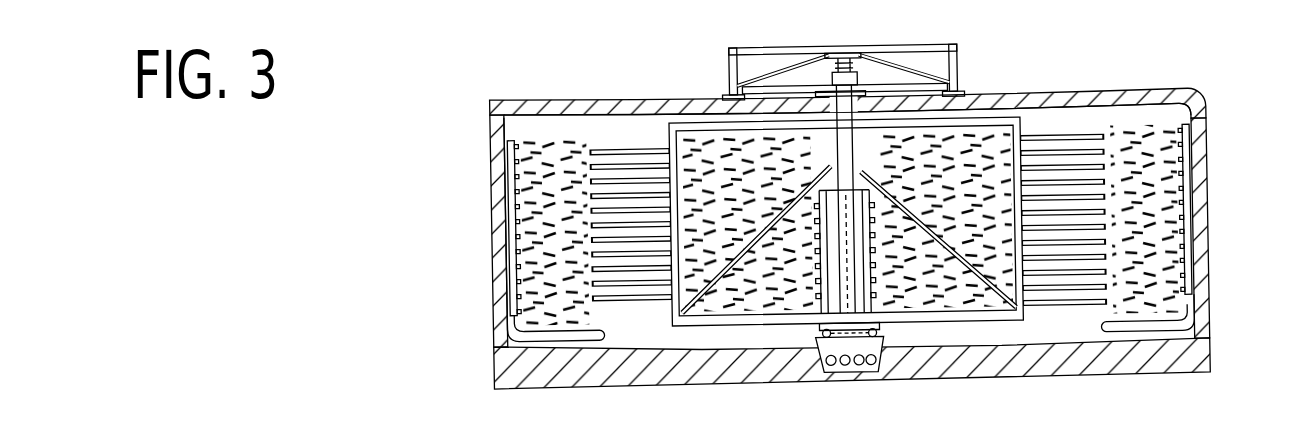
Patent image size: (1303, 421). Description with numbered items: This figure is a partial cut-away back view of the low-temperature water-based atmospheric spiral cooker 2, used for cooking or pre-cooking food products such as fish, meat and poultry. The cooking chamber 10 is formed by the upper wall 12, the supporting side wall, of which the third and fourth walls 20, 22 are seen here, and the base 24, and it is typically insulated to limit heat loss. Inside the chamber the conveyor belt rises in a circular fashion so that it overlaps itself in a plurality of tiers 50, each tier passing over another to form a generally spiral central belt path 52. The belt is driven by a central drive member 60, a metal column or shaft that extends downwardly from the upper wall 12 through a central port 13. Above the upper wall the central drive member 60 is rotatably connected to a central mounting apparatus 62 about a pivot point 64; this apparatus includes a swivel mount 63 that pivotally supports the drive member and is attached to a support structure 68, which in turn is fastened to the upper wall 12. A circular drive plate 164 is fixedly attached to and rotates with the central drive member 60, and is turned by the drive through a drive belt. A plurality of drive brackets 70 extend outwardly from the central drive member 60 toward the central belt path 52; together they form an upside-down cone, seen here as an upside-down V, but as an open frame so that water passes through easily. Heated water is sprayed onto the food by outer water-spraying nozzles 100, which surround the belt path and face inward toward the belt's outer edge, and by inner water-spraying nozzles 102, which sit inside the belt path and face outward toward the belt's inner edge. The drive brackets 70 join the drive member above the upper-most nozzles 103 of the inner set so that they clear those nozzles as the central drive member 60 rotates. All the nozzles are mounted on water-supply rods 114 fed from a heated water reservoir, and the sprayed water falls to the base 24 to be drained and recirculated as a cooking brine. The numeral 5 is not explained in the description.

The atmospheric cooker 2 is at (1099, 46).
The heat exchange tubes 5 is at (658, 182).
The cooking chamber 10 is at (1161, 80).
The upper wall 12 is at (1112, 89).
The central port 13 is at (889, 84).
The third wall 20 is at (492, 208).
The fourth wall 22 is at (1210, 180).
The base 24 is at (1157, 370).
The tiers 50 is at (602, 167).
The spiral central belt path 52 is at (826, 224).
The central drive member 60 is at (849, 150).
The central mounting apparatus 62 is at (860, 51).
The swivel mount 63 is at (833, 52).
The pivot point 64 is at (870, 60).
The support structure 68 is at (732, 52).
The drive brackets 70 is at (827, 173).
The outer water-spraying nozzles 100 is at (517, 137).
The inner water-spraying nozzles 102 is at (835, 293).
The upper-most nozzles 103 is at (798, 203).
The water-supply rods 114 is at (508, 143).
The drive plate 164 is at (878, 96).